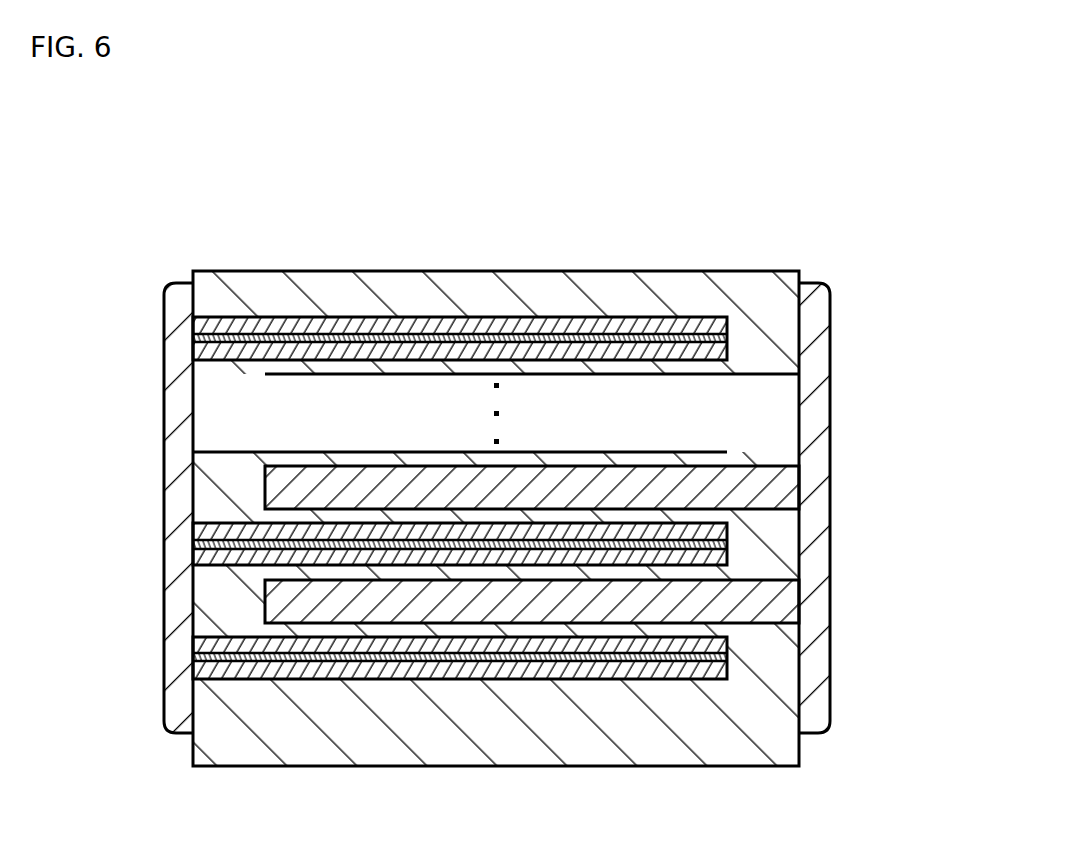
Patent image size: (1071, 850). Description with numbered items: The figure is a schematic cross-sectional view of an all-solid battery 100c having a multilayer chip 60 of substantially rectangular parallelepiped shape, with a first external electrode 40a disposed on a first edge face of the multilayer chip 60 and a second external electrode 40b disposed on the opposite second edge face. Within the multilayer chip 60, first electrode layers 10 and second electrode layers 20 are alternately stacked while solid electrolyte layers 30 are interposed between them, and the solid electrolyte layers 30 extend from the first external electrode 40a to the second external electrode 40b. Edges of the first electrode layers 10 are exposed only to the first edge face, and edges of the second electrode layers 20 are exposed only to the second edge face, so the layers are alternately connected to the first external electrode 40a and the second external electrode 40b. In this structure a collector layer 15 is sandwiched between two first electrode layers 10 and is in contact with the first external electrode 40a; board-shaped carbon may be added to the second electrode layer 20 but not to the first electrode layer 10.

The all-solid battery 100c is at (945, 133).
The multilayer chip 60 is at (496, 490).
The first electrode layer 10 is at (207, 533).
The collector layer 15 is at (207, 545).
The second electrode layer 20 is at (793, 496).
The solid electrolyte layer 30 is at (380, 630).
The first external electrode 40a is at (164, 350).
The second external electrode 40b is at (832, 350).